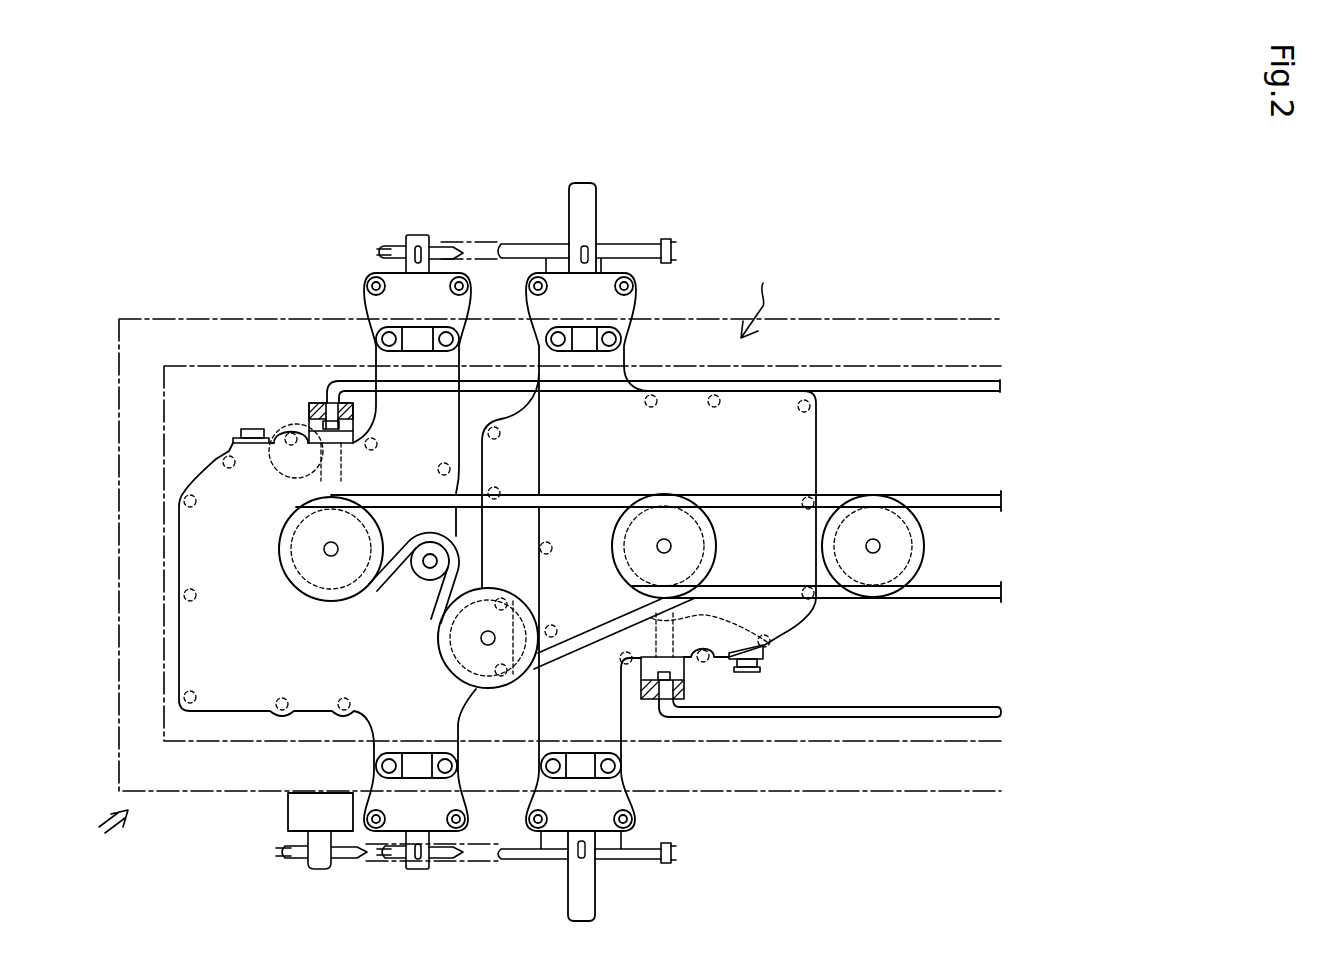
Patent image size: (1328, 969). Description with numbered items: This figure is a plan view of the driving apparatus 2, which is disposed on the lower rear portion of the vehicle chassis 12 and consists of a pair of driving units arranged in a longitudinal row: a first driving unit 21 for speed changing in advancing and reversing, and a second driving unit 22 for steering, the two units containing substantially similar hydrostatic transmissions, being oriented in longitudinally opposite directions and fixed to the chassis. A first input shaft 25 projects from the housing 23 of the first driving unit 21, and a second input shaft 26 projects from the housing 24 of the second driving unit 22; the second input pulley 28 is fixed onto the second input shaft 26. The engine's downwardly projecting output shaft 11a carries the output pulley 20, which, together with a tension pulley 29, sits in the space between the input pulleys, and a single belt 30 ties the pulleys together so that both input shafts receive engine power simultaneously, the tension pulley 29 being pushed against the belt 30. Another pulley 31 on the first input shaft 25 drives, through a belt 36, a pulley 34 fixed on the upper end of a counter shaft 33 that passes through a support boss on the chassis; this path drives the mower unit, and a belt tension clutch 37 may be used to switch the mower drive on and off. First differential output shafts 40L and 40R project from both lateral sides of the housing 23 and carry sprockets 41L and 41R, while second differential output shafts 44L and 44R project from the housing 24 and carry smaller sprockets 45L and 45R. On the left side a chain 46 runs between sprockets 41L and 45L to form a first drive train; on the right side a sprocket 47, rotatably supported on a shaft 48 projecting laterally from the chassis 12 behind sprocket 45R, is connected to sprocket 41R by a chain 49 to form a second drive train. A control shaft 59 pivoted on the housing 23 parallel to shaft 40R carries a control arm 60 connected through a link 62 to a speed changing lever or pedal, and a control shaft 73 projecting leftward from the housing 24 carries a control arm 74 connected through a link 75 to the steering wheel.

The driving apparatus 2 is at (104, 833).
The output shaft 11a is at (487, 642).
The vehicle chassis 12 is at (916, 318).
The output pulley 20 is at (438, 648).
The first driving unit 21 is at (770, 291).
The second driving unit 22 is at (257, 295).
The housing 23 is at (818, 418).
The housing 24 is at (212, 492).
The first input shaft 25 is at (665, 538).
The second input shaft 26 is at (328, 554).
The second input pulley 28 is at (290, 524).
The tension pulley 29 is at (420, 580).
The belt 30 is at (560, 492).
The pulley 31 is at (714, 542).
The counter shaft 33 is at (873, 550).
The pulley 34 is at (920, 540).
The belt 36 is at (766, 492).
The belt tension clutch 37 is at (970, 598).
The first differential output shaft 40L is at (568, 216).
The first differential output shaft 40R is at (590, 905).
The sprocket 41L is at (648, 242).
The sprocket 41R is at (615, 855).
The second differential output shaft 44L is at (414, 238).
The second differential output shaft 44R is at (425, 868).
The sprocket 45L is at (390, 246).
The sprocket 45R is at (400, 862).
The chain 46 is at (672, 247).
The sprocket 47 is at (300, 862).
The shaft 48 is at (310, 833).
The chain 49 is at (672, 845).
The control shaft 59 is at (765, 645).
The control arm 60 is at (686, 684).
The link 62 is at (838, 705).
The control shaft 73 is at (268, 422).
The control arm 74 is at (312, 402).
The link 75 is at (935, 388).